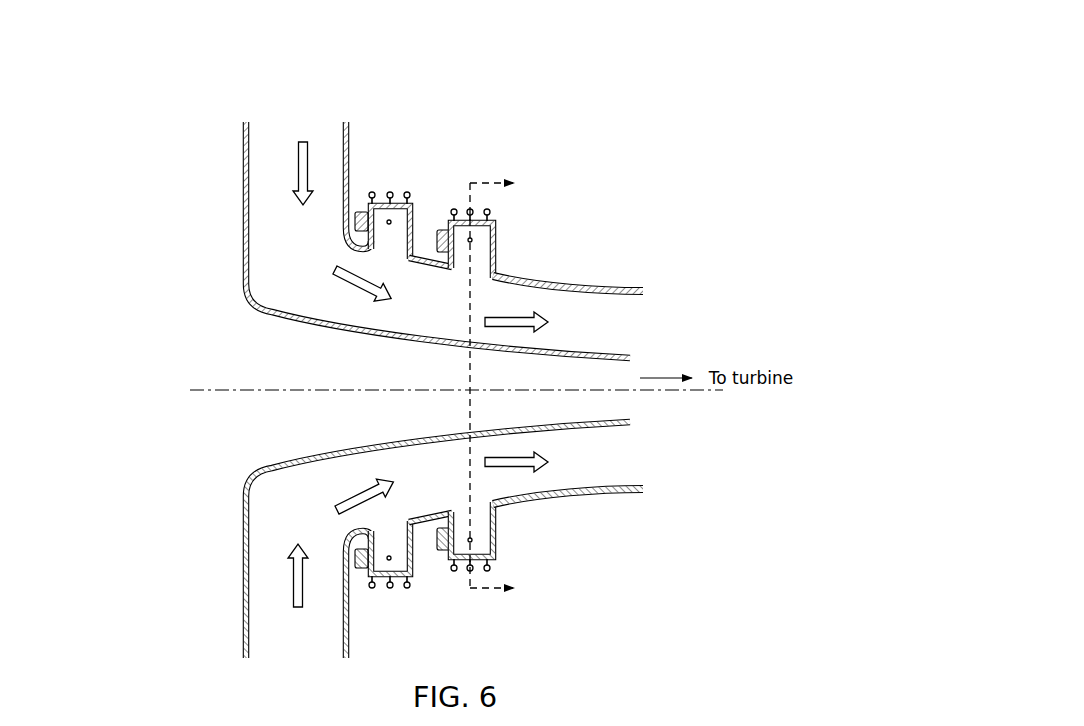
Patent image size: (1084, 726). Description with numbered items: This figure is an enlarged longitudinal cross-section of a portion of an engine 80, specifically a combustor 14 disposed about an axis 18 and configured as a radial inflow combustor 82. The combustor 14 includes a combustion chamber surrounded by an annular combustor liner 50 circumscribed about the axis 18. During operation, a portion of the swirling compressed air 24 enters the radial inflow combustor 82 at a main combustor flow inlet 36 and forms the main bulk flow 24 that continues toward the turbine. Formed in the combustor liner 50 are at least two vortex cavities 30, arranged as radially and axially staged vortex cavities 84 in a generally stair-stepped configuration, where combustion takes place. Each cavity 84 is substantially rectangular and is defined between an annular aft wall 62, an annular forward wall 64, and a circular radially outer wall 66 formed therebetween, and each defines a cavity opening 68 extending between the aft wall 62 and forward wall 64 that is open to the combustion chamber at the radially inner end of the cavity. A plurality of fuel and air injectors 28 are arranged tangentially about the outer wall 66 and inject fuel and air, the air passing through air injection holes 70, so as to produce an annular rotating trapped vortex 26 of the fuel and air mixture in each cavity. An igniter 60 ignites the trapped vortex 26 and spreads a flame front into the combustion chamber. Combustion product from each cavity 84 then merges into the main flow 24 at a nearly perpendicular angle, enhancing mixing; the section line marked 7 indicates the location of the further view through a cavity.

The main combustor flow inlet 36 is at (307, 111).
The axis 18 is at (246, 396).
The compressed air 24 is at (295, 170).
The fuel and air injectors 28 is at (403, 193).
The radially outer wall 66 is at (389, 200).
The forward wall 64 is at (358, 211).
The igniter 60 is at (440, 232).
The vortex cavities 30 is at (499, 331).
The radially and axially staged vortex cavities 84 is at (417, 207).
The engine 80 is at (530, 336).
The air injection holes 70 is at (503, 390).
The aft wall 62 is at (497, 244).
The annular rotating trapped vortex 26 is at (474, 240).
The cavity opening 68 is at (376, 251).
The combustor liner 50 is at (598, 325).
The combustor 14 is at (598, 325).
The radial inflow combustor 82 is at (581, 196).
The section line 7 is at (508, 387).